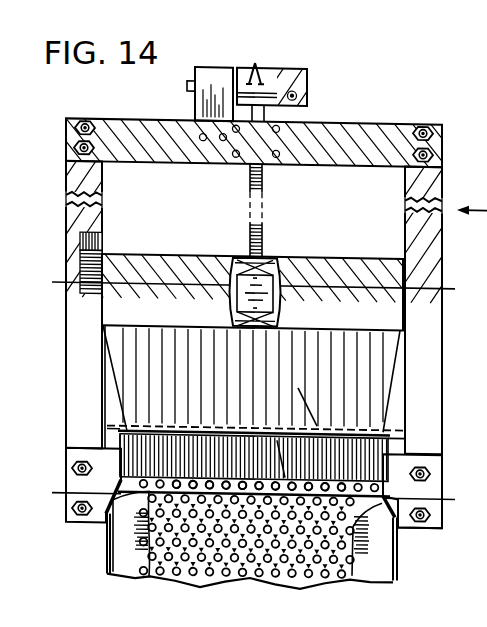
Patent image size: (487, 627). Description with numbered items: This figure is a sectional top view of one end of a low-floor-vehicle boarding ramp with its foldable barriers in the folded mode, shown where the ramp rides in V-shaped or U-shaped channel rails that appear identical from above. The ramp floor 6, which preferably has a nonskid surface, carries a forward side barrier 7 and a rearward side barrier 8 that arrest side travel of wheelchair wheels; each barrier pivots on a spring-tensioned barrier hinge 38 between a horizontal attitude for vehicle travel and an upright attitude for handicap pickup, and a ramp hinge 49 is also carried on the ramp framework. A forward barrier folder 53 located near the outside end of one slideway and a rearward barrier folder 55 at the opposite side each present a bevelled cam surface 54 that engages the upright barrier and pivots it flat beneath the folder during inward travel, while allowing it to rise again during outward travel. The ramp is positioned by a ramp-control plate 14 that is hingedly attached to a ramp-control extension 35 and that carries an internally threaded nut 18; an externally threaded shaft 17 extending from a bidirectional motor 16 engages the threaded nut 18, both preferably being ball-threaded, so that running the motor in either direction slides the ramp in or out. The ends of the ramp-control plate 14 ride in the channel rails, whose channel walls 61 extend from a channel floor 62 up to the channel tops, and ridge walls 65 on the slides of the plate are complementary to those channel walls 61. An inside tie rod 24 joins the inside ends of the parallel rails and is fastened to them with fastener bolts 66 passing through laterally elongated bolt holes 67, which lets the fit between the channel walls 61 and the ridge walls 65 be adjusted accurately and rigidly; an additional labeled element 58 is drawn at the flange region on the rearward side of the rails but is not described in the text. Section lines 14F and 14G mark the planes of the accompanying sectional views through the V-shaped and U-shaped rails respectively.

The ramp floor 6 is at (232, 517).
The forward side barrier 7 is at (372, 559).
The rearward side barrier 8 is at (137, 559).
The ramp-control plate 14 is at (362, 260).
The section line F 14F is at (249, 288).
The section line G 14G is at (248, 497).
The bidirectional motor 16 is at (187, 87).
The threaded shaft 17 is at (250, 237).
The threaded nut 18 is at (268, 276).
The inside tie rod 24 is at (338, 133).
The ramp-control extension 35 is at (320, 537).
The barrier hinge 38 is at (104, 552).
The ramp hinge 49 is at (274, 499).
The forward barrier folder 53 is at (440, 527).
The cam surface 54 is at (165, 520).
The rearward barrier folder 55 is at (64, 501).
The right flange 58 is at (440, 472).
The channel walls 61 is at (104, 240).
The channel floor 62 is at (105, 250).
The ridge walls 65 is at (106, 278).
The fastener bolts 66 is at (66, 123).
The bolt holes 67 is at (98, 127).